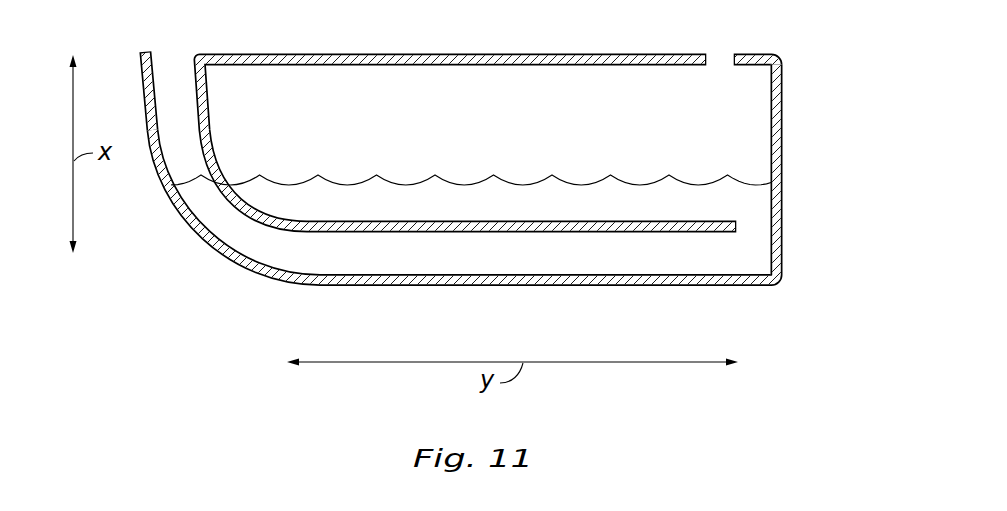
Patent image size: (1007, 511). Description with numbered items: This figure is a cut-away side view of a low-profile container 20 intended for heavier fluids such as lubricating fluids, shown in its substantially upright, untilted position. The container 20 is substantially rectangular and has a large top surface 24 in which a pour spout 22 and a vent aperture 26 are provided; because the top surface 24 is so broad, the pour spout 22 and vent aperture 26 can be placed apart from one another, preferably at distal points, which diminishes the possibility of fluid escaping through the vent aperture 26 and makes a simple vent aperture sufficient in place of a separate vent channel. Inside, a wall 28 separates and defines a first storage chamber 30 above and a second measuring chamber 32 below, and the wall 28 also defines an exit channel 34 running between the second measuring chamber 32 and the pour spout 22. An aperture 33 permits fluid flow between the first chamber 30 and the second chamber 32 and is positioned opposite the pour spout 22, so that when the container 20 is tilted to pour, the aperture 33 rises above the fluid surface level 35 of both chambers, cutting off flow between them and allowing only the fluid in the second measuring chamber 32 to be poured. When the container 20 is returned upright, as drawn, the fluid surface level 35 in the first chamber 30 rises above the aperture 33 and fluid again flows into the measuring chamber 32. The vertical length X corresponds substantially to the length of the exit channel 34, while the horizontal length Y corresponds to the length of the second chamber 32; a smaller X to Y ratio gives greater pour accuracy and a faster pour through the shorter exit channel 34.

The container 20 is at (822, 63).
The pour spout 22 is at (173, 58).
The top surface 24 is at (308, 55).
The vent aperture 26 is at (722, 60).
The wall 28 is at (630, 234).
The first storage chamber 30 is at (561, 134).
The second measuring chamber 32 is at (682, 255).
The aperture 33 is at (757, 228).
The exit channel 34 is at (178, 129).
The fluid surface level 35 is at (400, 183).